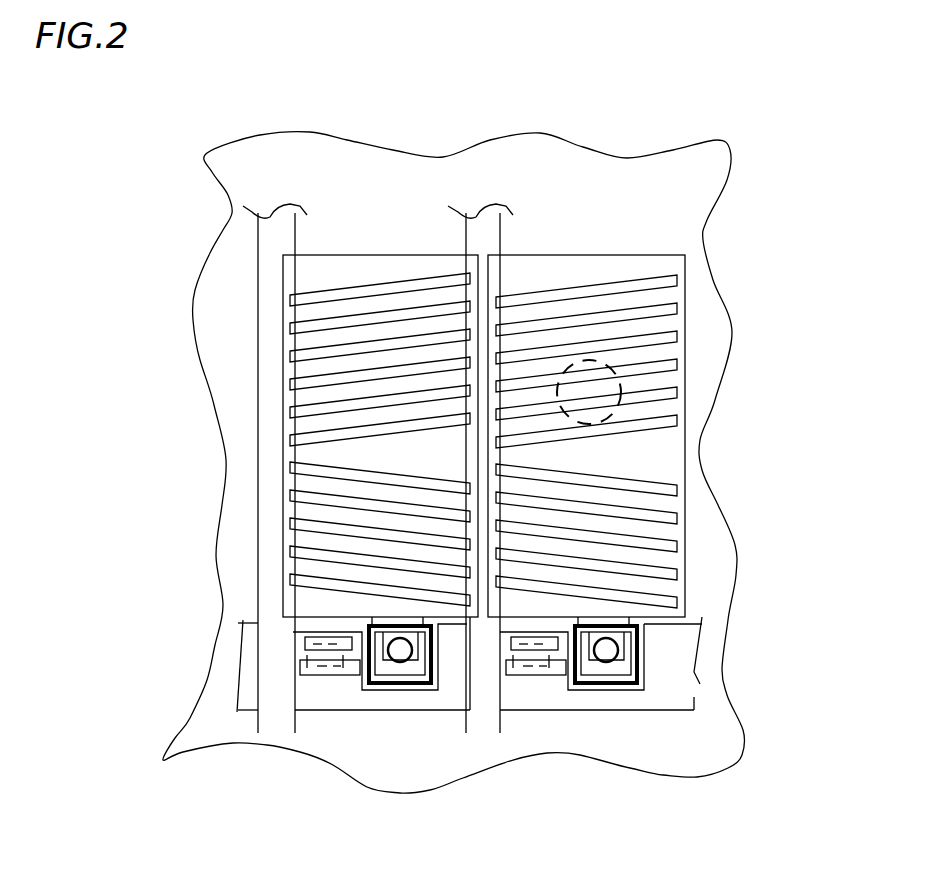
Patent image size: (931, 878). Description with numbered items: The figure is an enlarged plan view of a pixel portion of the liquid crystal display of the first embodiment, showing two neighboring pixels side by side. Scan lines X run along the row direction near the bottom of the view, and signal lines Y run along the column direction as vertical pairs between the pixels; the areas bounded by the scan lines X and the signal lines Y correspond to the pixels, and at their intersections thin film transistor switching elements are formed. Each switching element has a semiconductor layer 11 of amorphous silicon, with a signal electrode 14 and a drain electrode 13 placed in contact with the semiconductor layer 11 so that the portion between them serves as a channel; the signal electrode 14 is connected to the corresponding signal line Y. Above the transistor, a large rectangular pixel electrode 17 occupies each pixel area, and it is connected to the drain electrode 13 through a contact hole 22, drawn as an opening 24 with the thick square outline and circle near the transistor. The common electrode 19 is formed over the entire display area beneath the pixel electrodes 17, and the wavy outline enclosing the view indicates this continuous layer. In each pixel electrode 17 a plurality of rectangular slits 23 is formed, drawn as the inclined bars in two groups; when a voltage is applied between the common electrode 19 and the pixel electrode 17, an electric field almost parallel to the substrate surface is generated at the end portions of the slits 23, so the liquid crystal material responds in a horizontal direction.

The semiconductor layer 11 is at (325, 665).
The drain electrode 13 is at (355, 668).
The signal electrode 14 is at (300, 652).
The pixel electrode 17 is at (685, 290).
The common electrode 19 is at (703, 240).
The contact hole 22 is at (403, 685).
The slit 23 is at (677, 357).
The opening 24 is at (417, 687).
The scan line X is at (693, 668).
The signal line Y is at (483, 718).